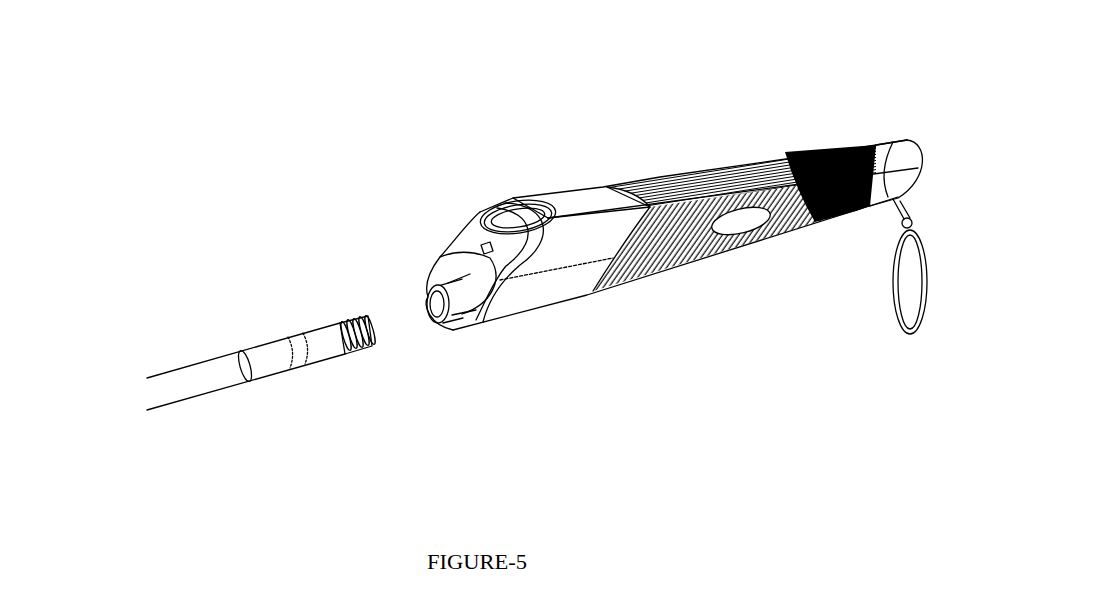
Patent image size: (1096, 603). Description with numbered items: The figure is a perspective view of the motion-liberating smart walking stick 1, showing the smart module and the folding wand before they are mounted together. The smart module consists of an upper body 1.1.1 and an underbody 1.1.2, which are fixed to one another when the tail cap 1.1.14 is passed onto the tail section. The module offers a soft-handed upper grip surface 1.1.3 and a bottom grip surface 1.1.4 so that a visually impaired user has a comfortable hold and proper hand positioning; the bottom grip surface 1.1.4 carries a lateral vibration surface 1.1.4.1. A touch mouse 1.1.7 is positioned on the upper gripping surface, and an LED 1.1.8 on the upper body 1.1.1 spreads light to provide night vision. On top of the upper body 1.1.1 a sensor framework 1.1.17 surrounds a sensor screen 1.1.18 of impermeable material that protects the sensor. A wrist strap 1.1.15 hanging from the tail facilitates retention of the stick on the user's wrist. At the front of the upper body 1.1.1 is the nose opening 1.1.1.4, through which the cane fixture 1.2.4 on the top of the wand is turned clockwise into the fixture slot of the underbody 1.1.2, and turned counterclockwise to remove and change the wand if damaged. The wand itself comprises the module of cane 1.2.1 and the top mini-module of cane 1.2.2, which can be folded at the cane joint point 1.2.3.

The motion-liberating smart walking stick 1 is at (437, 103).
The upper body 1.1.1 is at (463, 246).
The nose opening 1.1.1.4 is at (441, 308).
The underbody 1.1.2 is at (550, 303).
The upper grip surface 1.1.3 is at (692, 174).
The bottom grip surface 1.1.4 is at (684, 258).
The lateral vibration surface 1.1.4.1 is at (753, 221).
The touch mouse 1.1.7 is at (588, 198).
The LED 1.1.8 is at (482, 246).
The tail cap 1.1.14 is at (906, 149).
The wrist strap 1.1.15 is at (917, 324).
The sensor framework 1.1.17 is at (495, 222).
The sensor screen 1.1.18 is at (513, 224).
The module of cane 1.2.1 is at (202, 387).
The top mini-module of cane 1.2.2 is at (282, 366).
The cane joint point 1.2.3 is at (246, 356).
The cane fixture 1.2.4 is at (360, 342).